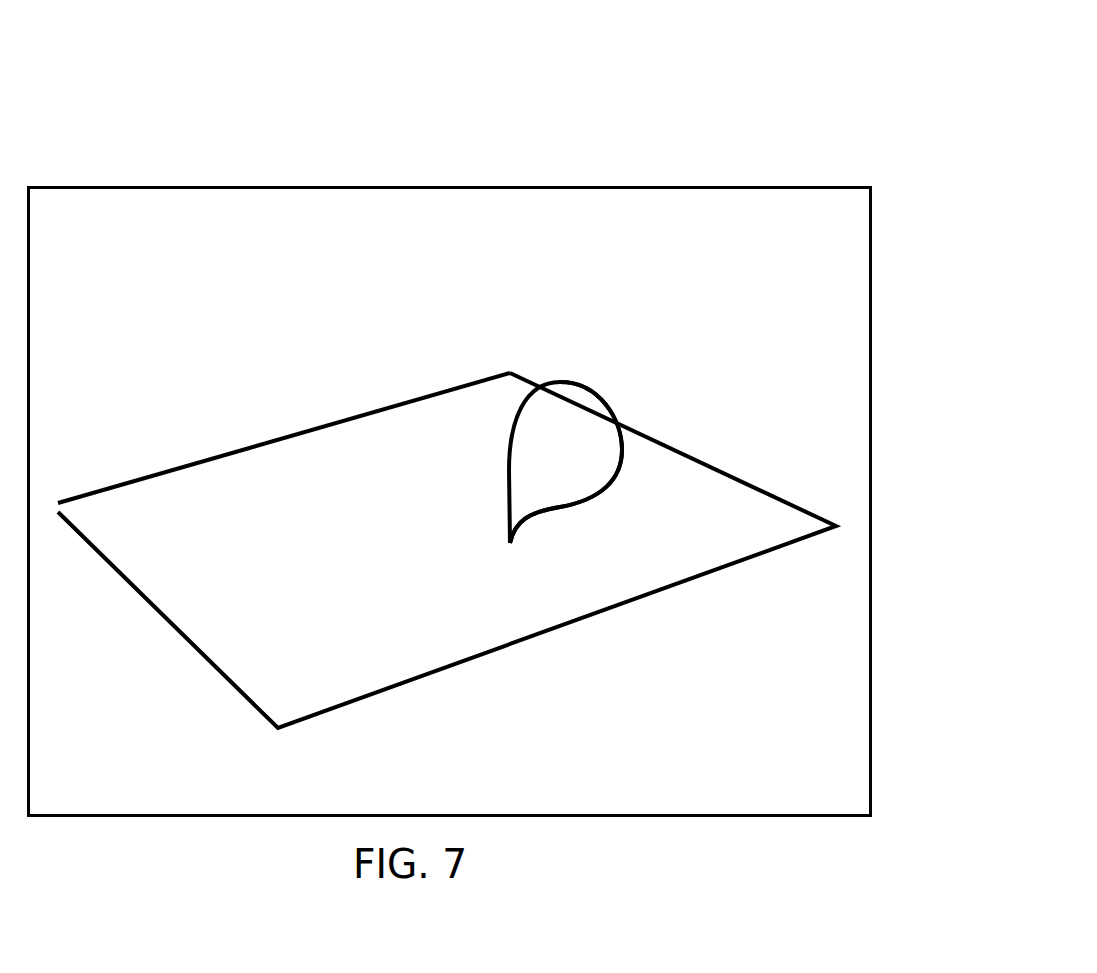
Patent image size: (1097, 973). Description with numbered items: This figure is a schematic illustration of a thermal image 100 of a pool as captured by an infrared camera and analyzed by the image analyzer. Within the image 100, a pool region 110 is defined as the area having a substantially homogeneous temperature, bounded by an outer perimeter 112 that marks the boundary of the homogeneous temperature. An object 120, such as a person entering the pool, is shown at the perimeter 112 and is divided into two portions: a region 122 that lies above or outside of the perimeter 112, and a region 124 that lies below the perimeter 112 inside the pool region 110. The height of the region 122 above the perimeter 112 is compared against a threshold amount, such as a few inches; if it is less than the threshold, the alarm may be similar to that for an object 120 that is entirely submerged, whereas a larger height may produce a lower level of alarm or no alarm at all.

The thermal image 100 is at (590, 125).
The pool region 110 is at (435, 550).
The outer perimeter 112 is at (290, 425).
The object 120 is at (545, 370).
The region above or outside the perimeter 122 is at (591, 392).
The region below the perimeter 124 is at (608, 476).